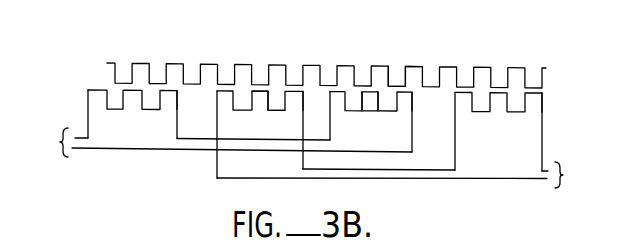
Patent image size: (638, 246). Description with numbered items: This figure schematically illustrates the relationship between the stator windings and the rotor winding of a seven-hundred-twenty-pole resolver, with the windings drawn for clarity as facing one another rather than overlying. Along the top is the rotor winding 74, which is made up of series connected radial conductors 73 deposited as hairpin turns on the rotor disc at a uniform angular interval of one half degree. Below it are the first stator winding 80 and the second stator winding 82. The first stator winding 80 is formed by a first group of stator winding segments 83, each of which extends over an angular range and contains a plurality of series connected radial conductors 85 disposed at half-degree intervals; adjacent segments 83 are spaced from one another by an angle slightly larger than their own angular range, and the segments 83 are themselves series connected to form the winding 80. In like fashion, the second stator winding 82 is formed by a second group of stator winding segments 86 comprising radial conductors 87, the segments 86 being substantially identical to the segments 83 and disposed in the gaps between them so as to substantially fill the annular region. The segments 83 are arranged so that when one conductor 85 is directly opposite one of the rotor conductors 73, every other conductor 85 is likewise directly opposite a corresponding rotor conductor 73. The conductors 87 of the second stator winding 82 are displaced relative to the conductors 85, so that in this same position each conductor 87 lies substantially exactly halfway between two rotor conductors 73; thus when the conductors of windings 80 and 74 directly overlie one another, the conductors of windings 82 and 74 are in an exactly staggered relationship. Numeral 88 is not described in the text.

The radial conductors 73 is at (405, 73).
The rotor winding 74 is at (99, 71).
The first stator winding 80 is at (407, 176).
The second stator winding 82 is at (223, 142).
The stator winding segments 83 is at (213, 123).
The radial conductors 85 is at (270, 103).
The stator winding segments 86 is at (425, 139).
The radial conductors 87 is at (367, 111).
The first pulse train 88 is at (85, 109).